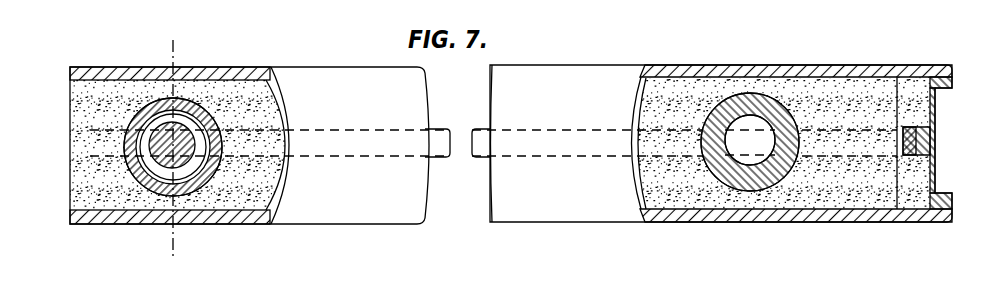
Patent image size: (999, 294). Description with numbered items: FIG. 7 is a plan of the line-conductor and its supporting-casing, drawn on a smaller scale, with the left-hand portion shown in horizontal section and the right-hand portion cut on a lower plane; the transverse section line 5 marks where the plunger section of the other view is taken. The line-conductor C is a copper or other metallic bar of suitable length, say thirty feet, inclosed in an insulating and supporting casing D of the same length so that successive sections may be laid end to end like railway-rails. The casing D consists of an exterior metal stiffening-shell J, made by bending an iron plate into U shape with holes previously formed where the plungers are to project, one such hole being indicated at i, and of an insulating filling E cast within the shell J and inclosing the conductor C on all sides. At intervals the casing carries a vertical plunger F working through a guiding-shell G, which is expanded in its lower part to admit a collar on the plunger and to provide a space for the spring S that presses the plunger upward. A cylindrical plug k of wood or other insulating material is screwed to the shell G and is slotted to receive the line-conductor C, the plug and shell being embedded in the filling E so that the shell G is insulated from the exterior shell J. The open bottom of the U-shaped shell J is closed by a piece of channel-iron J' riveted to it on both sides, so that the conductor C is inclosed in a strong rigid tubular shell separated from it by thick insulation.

The exterior metal stiffening-shell J is at (511, 132).
The spring S is at (140, 168).
The plunger F is at (152, 74).
The guiding-shell G is at (178, 97).
The section line 5 5 is at (172, 151).
The line-conductor C is at (478, 130).
The insulating and supporting casing D is at (536, 157).
The insulating filling E is at (797, 198).
The channel-iron J' is at (803, 143).
The insulating plug k is at (740, 96).
The hole i is at (750, 140).